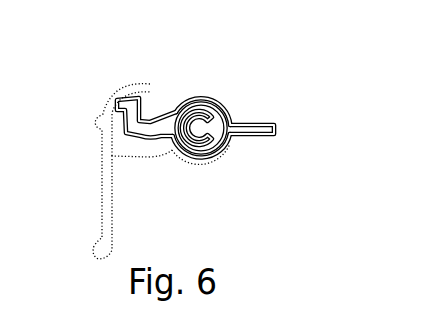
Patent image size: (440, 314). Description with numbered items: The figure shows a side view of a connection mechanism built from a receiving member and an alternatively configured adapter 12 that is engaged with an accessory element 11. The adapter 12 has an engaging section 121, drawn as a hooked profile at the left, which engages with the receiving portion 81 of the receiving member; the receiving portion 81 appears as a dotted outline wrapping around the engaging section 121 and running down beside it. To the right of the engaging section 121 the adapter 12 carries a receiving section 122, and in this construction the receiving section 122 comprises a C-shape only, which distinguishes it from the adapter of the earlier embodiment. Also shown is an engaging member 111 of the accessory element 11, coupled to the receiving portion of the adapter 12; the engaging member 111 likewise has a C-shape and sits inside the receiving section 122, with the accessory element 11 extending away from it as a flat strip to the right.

The accessory element 11 is at (262, 106).
The engaging member 111 is at (244, 151).
The adapter 12 is at (209, 117).
The engaging section 121 is at (157, 97).
The receiving section 122 is at (226, 179).
The receiving portion 81 is at (66, 156).